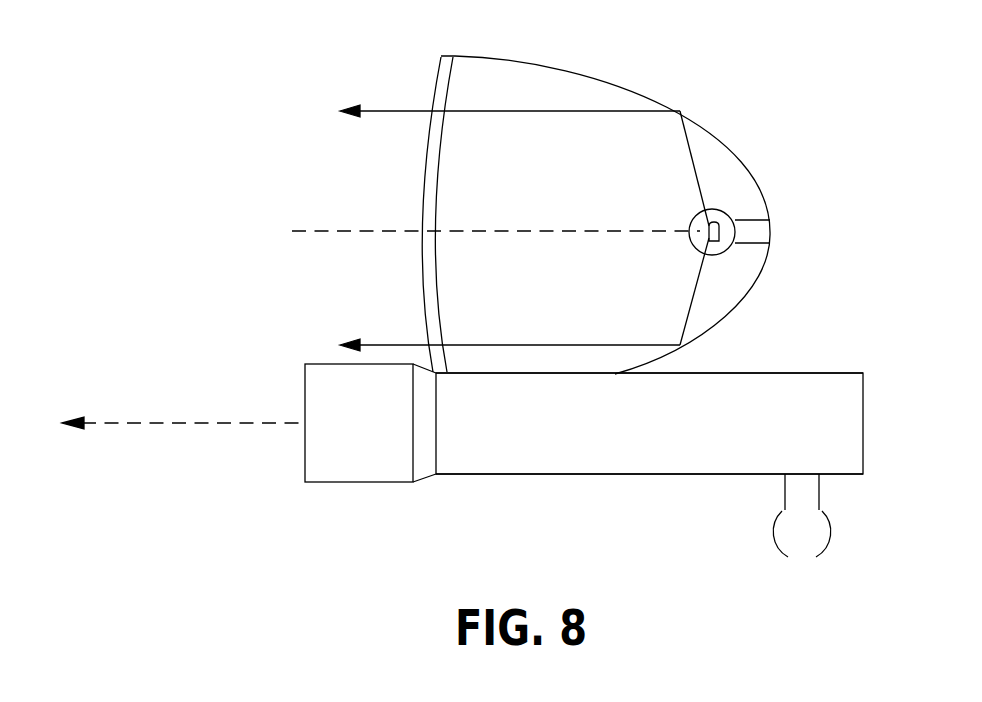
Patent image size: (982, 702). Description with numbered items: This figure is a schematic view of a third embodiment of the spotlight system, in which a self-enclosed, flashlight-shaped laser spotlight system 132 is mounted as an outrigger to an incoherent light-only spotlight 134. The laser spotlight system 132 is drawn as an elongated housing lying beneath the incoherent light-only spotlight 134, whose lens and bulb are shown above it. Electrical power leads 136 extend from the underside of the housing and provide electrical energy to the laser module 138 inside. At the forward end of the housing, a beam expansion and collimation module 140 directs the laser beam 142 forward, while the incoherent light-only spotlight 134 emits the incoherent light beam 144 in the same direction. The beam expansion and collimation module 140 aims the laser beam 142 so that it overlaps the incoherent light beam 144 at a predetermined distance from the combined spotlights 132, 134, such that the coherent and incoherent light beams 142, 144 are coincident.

The laser spotlight system 132 is at (808, 344).
The incoherent light-only spotlight 134 is at (727, 72).
The electrical power leads 136 is at (801, 530).
The laser module 138 is at (655, 451).
The beam expansion and collimation module 140 is at (366, 458).
The laser beam 142 is at (141, 424).
The incoherent light beam 144 is at (385, 112).